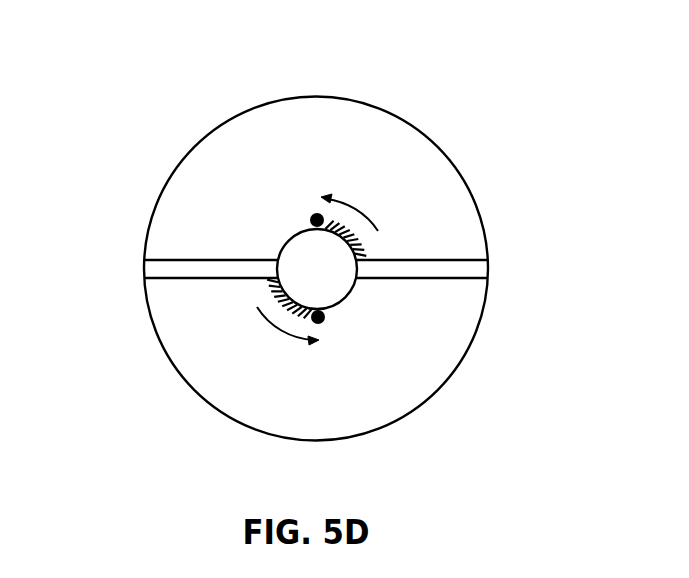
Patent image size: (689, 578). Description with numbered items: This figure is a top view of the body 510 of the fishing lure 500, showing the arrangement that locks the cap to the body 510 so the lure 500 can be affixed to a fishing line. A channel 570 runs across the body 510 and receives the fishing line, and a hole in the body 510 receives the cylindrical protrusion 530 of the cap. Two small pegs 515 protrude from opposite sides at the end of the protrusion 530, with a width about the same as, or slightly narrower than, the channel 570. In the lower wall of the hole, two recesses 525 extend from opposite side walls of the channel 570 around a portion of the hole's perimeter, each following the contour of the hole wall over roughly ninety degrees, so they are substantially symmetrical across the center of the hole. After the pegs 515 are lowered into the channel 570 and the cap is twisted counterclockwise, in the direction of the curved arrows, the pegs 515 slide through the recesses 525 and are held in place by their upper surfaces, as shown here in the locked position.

The fishing lure 500 is at (135, 51).
The body 510 is at (445, 191).
The pegs 515 is at (317, 220).
The recess 525 is at (366, 253).
The protrusion 530 is at (302, 245).
The channel 570 is at (177, 278).